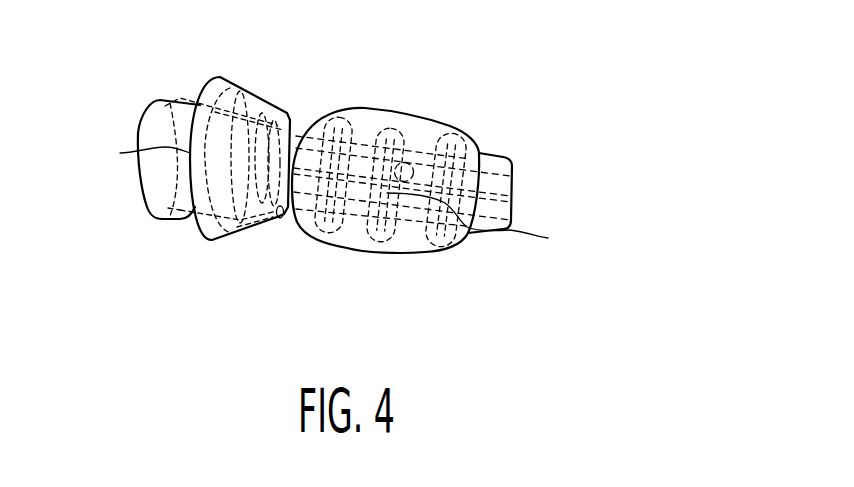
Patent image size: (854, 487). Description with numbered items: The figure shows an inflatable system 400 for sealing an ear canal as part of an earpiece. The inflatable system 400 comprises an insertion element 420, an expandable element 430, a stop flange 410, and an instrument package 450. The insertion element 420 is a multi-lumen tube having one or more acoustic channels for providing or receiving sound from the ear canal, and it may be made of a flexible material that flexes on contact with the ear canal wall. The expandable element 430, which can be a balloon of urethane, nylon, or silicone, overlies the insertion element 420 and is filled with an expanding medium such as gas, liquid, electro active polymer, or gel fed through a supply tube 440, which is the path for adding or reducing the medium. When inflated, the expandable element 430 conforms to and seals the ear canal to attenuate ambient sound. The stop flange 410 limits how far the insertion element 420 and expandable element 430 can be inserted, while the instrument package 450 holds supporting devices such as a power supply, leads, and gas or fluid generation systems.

The inflatable system 400 is at (483, 103).
The stop flange 410 is at (255, 112).
The insertion element 420 is at (281, 219).
The expandable element 430 is at (388, 252).
The supply tube 440 is at (484, 203).
The instrument package 450 is at (120, 153).